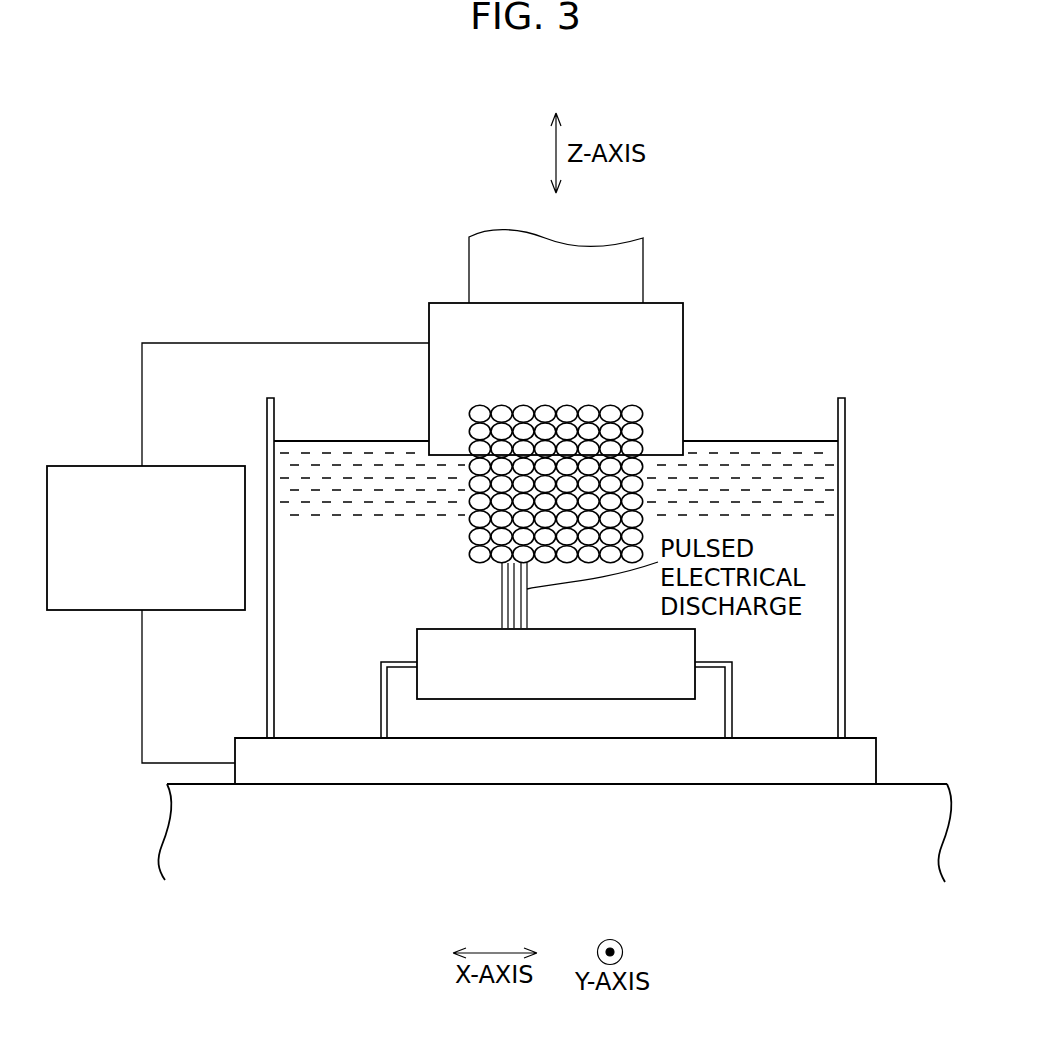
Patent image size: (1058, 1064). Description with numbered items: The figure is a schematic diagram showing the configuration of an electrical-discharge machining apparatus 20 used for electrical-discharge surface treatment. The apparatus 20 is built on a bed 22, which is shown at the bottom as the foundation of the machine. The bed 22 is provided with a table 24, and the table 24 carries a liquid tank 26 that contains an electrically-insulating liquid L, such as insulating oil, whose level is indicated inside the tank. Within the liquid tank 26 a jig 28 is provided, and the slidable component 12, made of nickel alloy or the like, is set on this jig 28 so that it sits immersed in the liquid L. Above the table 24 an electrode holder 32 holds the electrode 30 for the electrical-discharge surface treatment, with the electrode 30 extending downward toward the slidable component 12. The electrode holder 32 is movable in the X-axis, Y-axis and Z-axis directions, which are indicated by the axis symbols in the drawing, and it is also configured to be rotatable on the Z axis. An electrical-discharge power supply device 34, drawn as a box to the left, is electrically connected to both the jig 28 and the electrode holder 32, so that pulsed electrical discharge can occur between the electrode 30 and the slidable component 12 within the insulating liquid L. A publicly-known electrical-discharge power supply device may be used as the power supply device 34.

The slidable component 12 is at (695, 640).
The electrical-discharge machining apparatus 20 is at (766, 262).
The bed 22 is at (908, 784).
The table 24 is at (413, 773).
The liquid tank 26 is at (845, 565).
The jig 28 is at (732, 697).
The electrode 30 is at (470, 534).
The electrode holder 32 is at (683, 364).
The electrical-discharge power supply device 34 is at (111, 466).
The electrically-insulating liquid L is at (818, 463).